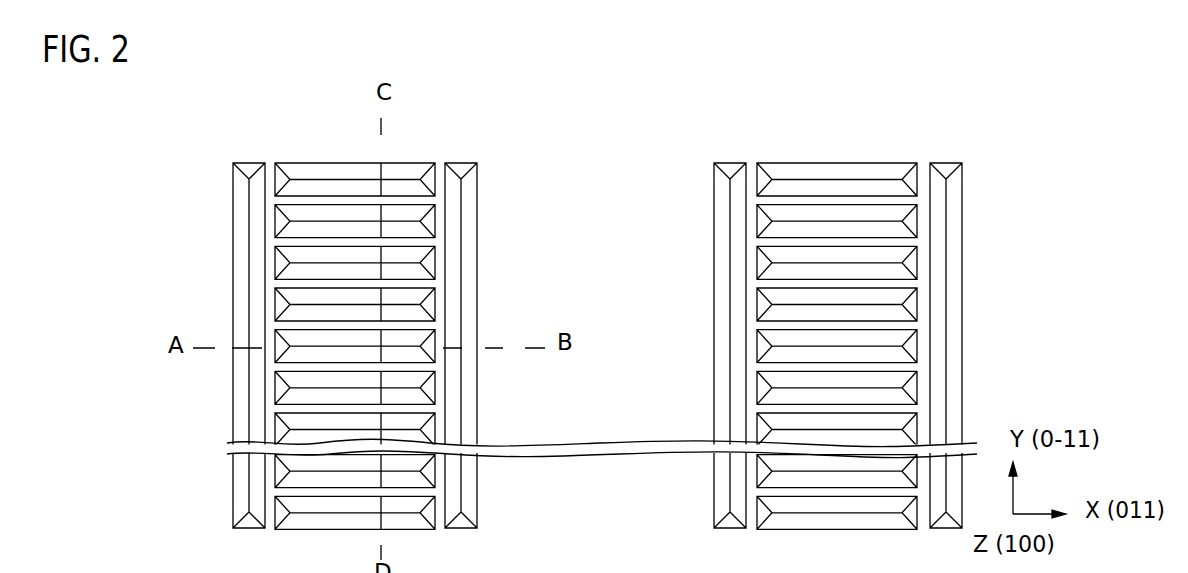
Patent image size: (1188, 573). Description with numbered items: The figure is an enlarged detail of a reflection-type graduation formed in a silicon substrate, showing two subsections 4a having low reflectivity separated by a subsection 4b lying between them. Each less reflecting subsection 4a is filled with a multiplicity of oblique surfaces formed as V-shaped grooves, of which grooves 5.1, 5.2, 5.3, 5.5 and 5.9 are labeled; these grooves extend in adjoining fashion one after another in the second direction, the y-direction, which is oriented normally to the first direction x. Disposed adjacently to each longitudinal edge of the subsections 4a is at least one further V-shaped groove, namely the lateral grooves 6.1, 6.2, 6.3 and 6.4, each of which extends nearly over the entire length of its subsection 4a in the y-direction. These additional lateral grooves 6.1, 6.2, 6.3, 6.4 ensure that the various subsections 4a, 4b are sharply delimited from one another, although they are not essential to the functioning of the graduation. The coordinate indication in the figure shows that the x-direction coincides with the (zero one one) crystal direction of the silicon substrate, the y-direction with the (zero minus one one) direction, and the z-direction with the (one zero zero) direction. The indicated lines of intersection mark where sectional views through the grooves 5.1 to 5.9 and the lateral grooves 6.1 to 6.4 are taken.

The subsection having low reflectivity 4a is at (338, 160).
The subsection 4b is at (566, 160).
The V-shaped groove 5.1 is at (307, 163).
The V-shaped groove 5.2 is at (288, 232).
The V-shaped groove 5.3 is at (288, 273).
The V-shaped groove 5.5 is at (288, 355).
The V-shaped groove 5.9 is at (290, 519).
The additional lateral V-shaped groove 6.1 is at (240, 213).
The additional lateral V-shaped groove 6.2 is at (466, 283).
The additional lateral V-shaped groove 6.3 is at (722, 352).
The additional lateral V-shaped groove 6.4 is at (955, 297).